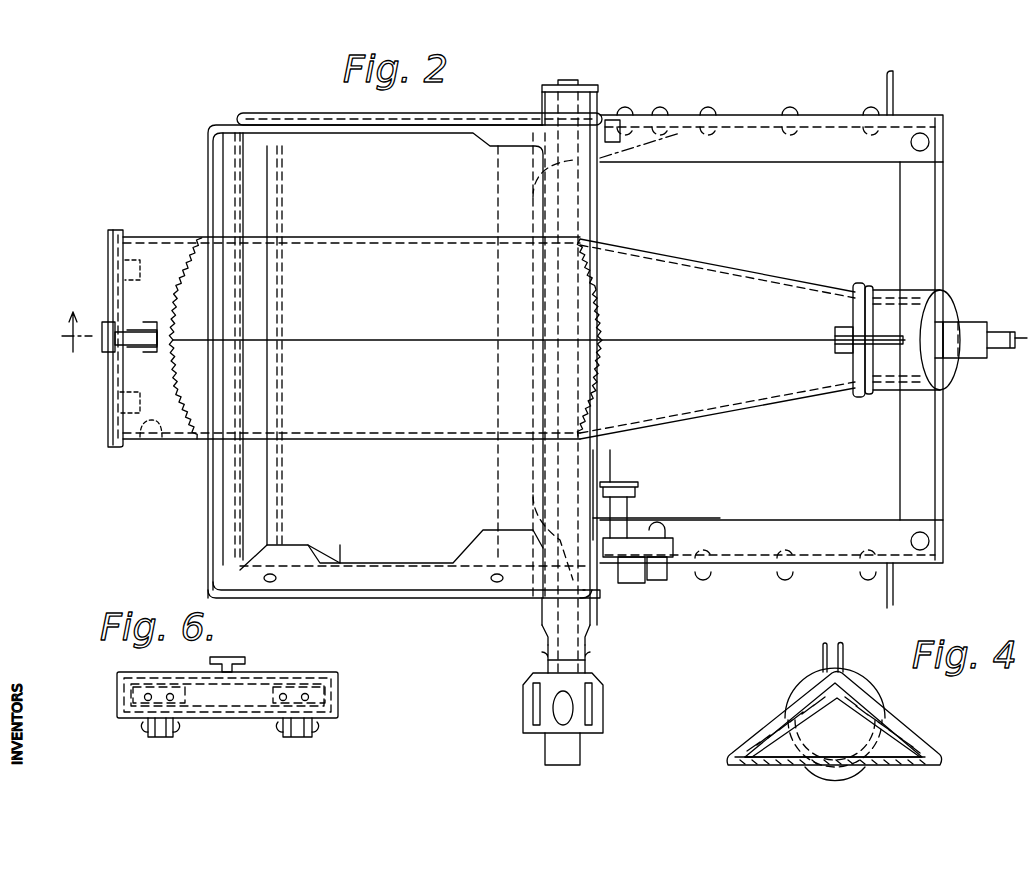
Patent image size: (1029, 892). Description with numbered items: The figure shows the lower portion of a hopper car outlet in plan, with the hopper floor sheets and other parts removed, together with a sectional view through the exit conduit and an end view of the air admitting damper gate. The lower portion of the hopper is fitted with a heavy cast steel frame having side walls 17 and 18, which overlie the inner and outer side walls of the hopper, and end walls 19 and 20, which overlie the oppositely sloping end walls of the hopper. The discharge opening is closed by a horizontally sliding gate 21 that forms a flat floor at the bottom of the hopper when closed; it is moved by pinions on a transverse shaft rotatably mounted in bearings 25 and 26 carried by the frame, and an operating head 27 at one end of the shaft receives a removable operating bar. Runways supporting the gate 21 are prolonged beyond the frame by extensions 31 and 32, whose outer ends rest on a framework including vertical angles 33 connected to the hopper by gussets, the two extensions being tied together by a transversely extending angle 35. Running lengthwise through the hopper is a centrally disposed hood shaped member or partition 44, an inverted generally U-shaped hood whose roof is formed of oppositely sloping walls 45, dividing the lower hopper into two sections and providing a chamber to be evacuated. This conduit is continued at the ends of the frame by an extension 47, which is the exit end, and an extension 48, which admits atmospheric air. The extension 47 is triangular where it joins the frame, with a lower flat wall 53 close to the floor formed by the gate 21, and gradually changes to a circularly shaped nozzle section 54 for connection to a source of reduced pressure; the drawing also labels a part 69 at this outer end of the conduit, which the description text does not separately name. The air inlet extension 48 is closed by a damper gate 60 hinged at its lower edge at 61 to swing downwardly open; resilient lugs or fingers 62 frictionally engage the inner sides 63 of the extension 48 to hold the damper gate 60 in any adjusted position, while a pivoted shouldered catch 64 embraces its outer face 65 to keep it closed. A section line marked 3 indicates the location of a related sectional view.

In FIG. 2, the section line / direction of view 3 is at (544, 345).
In FIG. 2, the side wall of frame 17 is at (293, 119).
In FIG. 2, the side wall of frame 18 is at (405, 598).
In FIG. 2, the end wall of frame 19 is at (583, 449).
In FIG. 2, the end wall of frame 20 is at (206, 500).
In FIG. 2, the sliding gate 21 is at (392, 511).
In FIG. 2, the bearing 25 is at (600, 100).
In FIG. 2, the bearing 26 is at (598, 590).
In FIG. 2, the operating head 27 is at (605, 695).
In FIG. 2, the extension 31 is at (803, 524).
In FIG. 2, the extension 32 is at (815, 158).
In FIG. 2, the vertical angle 33 is at (895, 84).
In FIG. 2, the transversely extending angle 35 is at (945, 437).
In FIG. 2, the hood shaped member or partition 44 is at (383, 442).
In FIG. 2, the oppositely sloping wall 45 is at (392, 308).
In FIG. 4, the oppositely sloping wall 45 is at (762, 728).
In FIG. 2, the conduit extension 47 is at (801, 413).
In FIG. 4, the conduit extension 47 is at (926, 714).
In FIG. 2, the conduit extension 48 is at (175, 449).
In FIG. 6, the conduit extension 48 is at (215, 710).
In FIG. 4, the lower flat wall 53 is at (870, 764).
In FIG. 4, the circularly shaped nozzle section 54 is at (855, 695).
In FIG. 2, the damper gate 60 is at (93, 256).
In FIG. 6, the hinge 61 is at (160, 738).
In FIG. 2, the resilient lug or finger 62 is at (152, 247).
In FIG. 6, the resilient lug or finger 62 is at (143, 680).
In FIG. 2, the inner side of conduit extension 63 is at (190, 248).
In FIG. 6, the inner side of conduit extension 63 is at (130, 695).
In FIG. 6, the pivoted shouldered catch 64 is at (229, 658).
In FIG. 2, the outer face of damper gate 65 is at (103, 388).
In FIG. 6, the outer face of damper gate 65 is at (247, 700).
In FIG. 2, the lamp / light source 69 is at (910, 308).